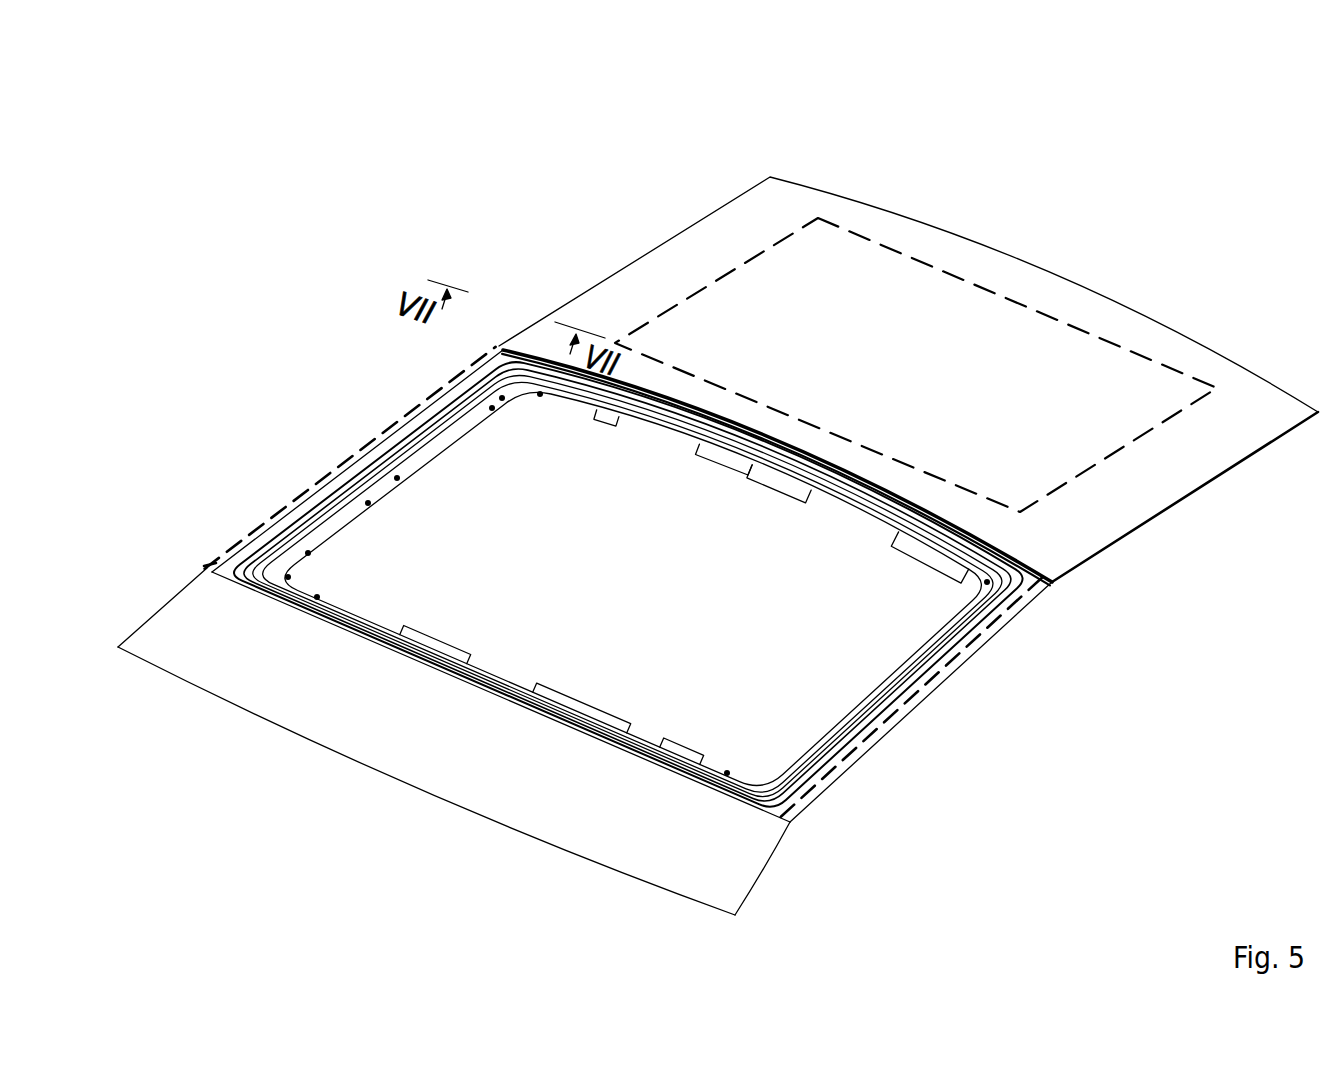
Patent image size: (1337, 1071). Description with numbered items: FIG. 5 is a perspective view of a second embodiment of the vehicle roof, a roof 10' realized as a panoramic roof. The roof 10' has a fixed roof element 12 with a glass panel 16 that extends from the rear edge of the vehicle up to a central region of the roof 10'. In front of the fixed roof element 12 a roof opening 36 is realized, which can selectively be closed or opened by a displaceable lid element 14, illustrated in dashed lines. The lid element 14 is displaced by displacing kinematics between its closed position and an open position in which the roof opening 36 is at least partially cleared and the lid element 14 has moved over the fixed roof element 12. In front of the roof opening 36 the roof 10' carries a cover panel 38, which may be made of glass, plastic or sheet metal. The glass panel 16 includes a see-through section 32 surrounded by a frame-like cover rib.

The roof 10' is at (569, 119).
The fixed roof element 12 is at (1140, 487).
The glass panel 16 is at (718, 663).
The lid element 14 is at (313, 478).
The see-through section 32 is at (975, 340).
The roof opening 36 is at (853, 710).
The cover panel 38 is at (418, 747).